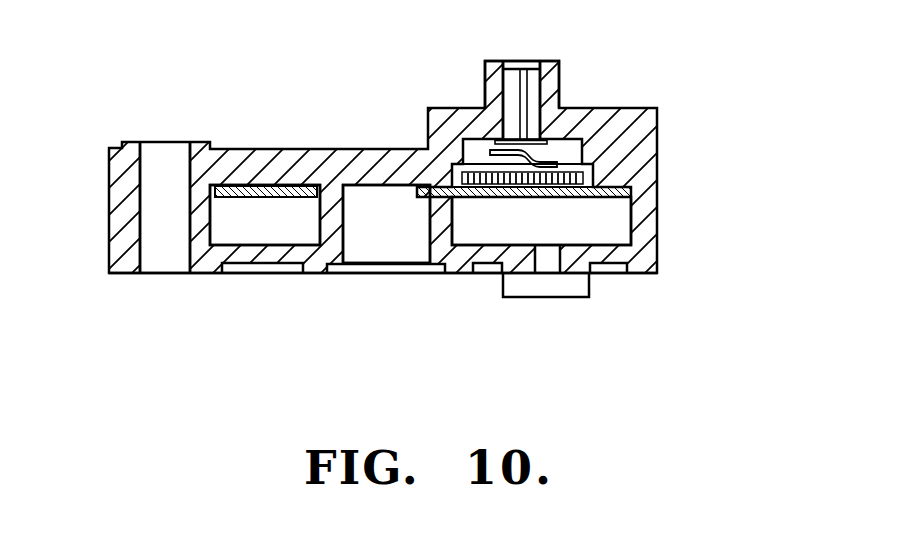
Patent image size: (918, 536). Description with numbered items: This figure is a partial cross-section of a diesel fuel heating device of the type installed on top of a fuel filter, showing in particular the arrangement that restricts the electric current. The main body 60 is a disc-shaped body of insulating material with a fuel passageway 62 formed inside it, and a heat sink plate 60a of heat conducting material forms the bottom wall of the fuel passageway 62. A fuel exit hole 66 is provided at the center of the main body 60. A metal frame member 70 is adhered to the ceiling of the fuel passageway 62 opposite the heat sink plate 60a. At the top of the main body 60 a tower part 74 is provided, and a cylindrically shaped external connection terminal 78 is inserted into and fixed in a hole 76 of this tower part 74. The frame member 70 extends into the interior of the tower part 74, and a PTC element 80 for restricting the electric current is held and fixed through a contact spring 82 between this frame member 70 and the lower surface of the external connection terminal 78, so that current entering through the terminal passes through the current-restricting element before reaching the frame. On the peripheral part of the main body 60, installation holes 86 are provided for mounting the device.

The main body 60 is at (659, 148).
The heat sink plate 60a is at (643, 274).
The fuel passageway 62 is at (240, 232).
The fuel exit hole 66 is at (350, 247).
The frame member 70 is at (257, 183).
The tower part 74 is at (563, 75).
The hole 76 is at (503, 88).
The external connection terminal 78 is at (520, 78).
The PTC element for restricting the electric current 80 is at (483, 166).
The contact spring 82 is at (562, 133).
The installation holes 86 is at (140, 182).